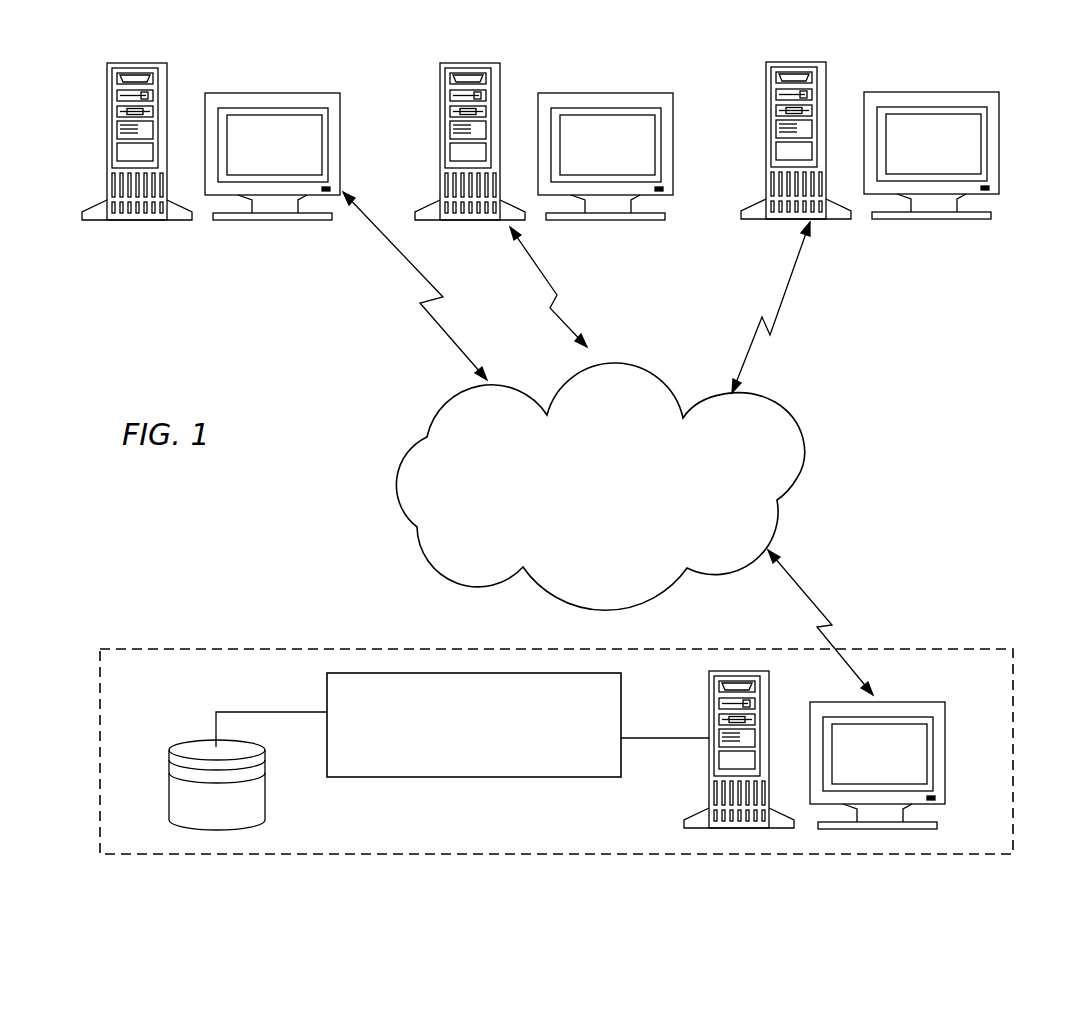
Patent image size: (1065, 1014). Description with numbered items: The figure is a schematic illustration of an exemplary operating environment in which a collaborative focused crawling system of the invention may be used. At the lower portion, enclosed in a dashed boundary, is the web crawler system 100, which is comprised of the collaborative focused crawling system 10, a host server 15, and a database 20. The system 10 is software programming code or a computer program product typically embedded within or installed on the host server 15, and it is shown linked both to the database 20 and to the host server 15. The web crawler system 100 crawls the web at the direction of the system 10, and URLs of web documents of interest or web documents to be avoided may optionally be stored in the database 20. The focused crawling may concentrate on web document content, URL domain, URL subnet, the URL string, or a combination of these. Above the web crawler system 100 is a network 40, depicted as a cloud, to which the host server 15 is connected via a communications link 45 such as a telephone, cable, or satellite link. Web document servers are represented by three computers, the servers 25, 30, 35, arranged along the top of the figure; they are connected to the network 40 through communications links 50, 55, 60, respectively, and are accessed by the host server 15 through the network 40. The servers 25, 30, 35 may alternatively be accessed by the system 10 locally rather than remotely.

The system 10 is at (327, 747).
The host server 15 is at (708, 725).
The database 20 is at (203, 738).
The server 25 is at (107, 118).
The server 30 is at (440, 118).
The server 35 is at (766, 117).
The network 40 is at (802, 417).
The communications link 45 is at (800, 587).
The communications link 50 is at (400, 252).
The communications link 55 is at (543, 281).
The communications link 60 is at (793, 270).
The web crawler system 100 is at (962, 647).